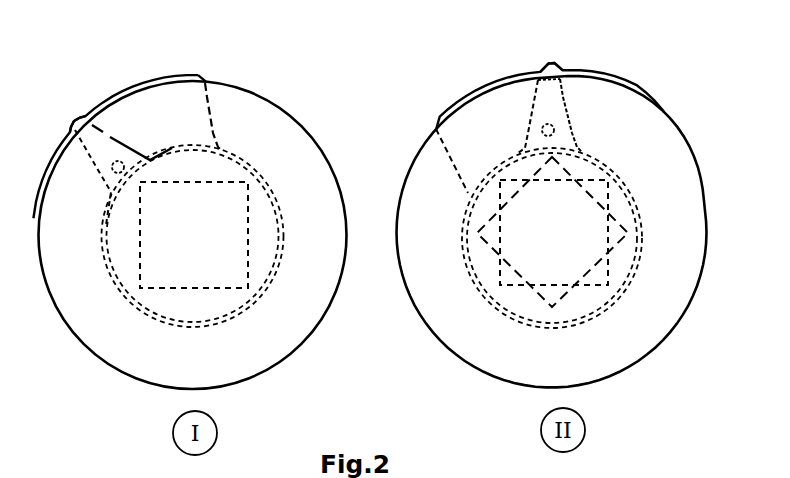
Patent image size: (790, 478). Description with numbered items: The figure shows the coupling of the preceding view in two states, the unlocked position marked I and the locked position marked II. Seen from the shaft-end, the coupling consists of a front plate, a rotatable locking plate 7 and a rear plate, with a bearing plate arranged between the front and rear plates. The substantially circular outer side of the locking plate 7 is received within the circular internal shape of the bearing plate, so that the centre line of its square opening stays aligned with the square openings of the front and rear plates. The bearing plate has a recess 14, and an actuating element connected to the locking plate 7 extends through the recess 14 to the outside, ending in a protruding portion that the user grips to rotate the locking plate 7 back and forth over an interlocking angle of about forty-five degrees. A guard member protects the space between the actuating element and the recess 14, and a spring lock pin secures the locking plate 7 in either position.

The locking plate 7 is at (262, 230).
The recess 14 is at (178, 113).